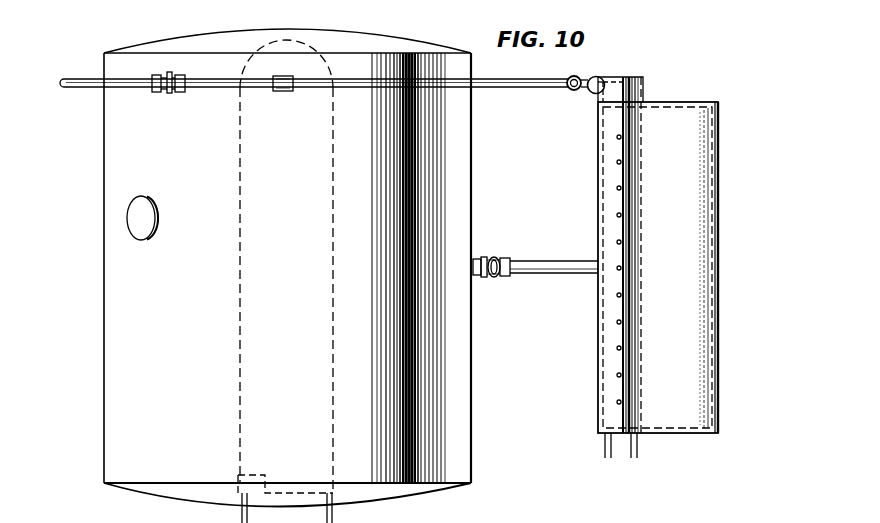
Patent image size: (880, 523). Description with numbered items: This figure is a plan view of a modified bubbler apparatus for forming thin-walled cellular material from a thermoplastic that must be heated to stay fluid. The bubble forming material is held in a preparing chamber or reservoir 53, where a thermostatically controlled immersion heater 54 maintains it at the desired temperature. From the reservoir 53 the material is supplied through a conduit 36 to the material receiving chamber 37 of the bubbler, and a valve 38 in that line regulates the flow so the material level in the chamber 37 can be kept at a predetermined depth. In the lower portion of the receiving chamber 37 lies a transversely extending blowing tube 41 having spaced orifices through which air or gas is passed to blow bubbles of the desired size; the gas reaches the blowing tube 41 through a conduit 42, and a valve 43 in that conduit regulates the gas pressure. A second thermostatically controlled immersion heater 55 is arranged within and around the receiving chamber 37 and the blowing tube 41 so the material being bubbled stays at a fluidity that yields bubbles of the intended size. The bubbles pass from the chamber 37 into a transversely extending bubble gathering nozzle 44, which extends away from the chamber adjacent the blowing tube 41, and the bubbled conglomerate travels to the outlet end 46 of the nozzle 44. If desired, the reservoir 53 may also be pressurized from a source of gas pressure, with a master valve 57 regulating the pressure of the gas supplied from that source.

The conduit 36 is at (548, 268).
The material receiving chamber 37 is at (620, 193).
The valve 38 is at (499, 257).
The blowing tube 41 is at (621, 87).
The conduit 42 is at (529, 86).
The valve 43 is at (573, 92).
The bubble gathering nozzle 44 is at (697, 288).
The outlet end of the nozzle 46 is at (719, 365).
The reservoir 53 is at (467, 439).
The thermostatically controlled immersion heater 54 is at (333, 429).
The thermostatically controlled immersion heater 55 is at (634, 449).
The master valve 57 is at (176, 93).